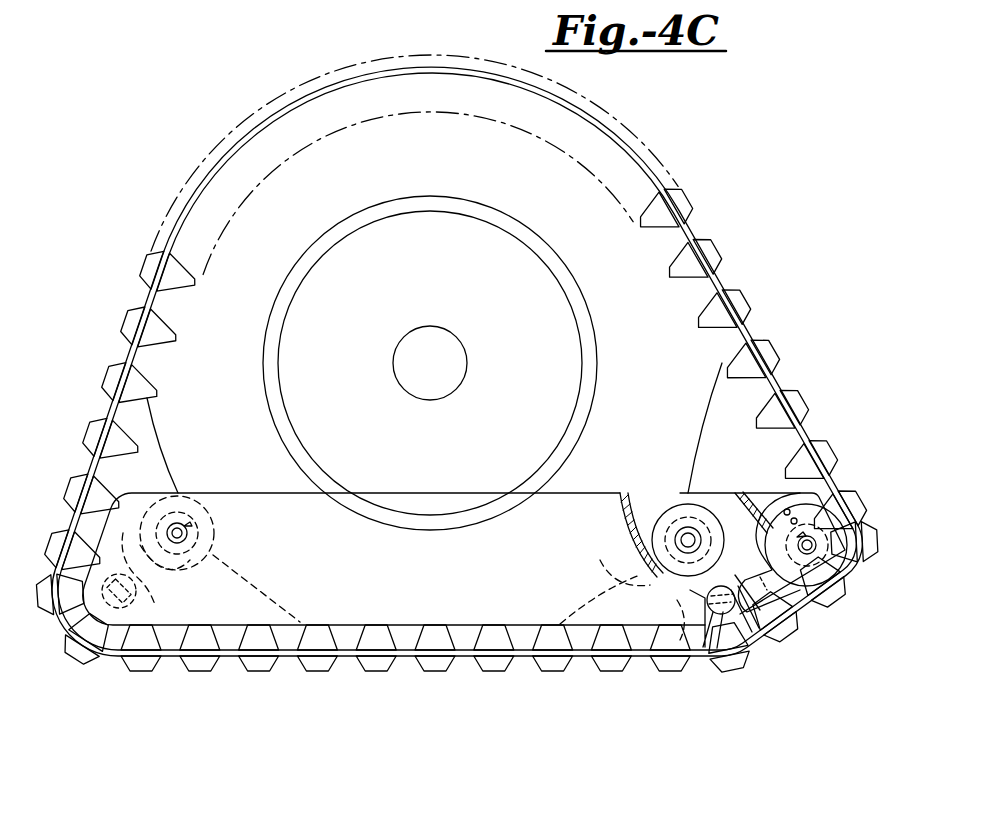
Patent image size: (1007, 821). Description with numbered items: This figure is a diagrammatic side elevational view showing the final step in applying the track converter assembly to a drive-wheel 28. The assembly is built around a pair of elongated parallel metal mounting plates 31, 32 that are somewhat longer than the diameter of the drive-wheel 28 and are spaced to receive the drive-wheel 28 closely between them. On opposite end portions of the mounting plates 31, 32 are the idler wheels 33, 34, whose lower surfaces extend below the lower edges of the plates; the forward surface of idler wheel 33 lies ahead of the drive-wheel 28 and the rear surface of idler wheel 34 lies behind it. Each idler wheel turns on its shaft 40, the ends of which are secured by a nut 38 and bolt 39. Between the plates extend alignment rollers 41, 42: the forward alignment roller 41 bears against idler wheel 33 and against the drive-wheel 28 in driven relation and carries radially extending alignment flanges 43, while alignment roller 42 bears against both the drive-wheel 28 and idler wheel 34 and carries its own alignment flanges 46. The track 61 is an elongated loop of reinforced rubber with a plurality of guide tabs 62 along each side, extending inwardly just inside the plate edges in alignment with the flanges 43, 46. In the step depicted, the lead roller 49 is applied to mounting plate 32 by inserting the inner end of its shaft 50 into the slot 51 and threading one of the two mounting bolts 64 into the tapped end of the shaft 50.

The drive-wheel 28 is at (436, 168).
The mounting plate 31 is at (441, 586).
The mounting plate 32 is at (682, 506).
The idler wheel 33 is at (697, 650).
The idler wheel 34 is at (158, 626).
The nut 38 is at (717, 650).
The bolt 39 is at (760, 632).
The shaft 40 is at (722, 555).
The alignment roller 41 is at (607, 575).
The alignment roller 42 is at (170, 505).
The alignment flange 43 is at (668, 510).
The alignment flange 46 is at (213, 517).
The lead roller 49 is at (758, 540).
The shaft 50 is at (838, 570).
The slot 51 is at (807, 530).
The track 61 is at (120, 352).
The guide tabs 62 is at (188, 343).
The mounting bolt 64 is at (803, 533).